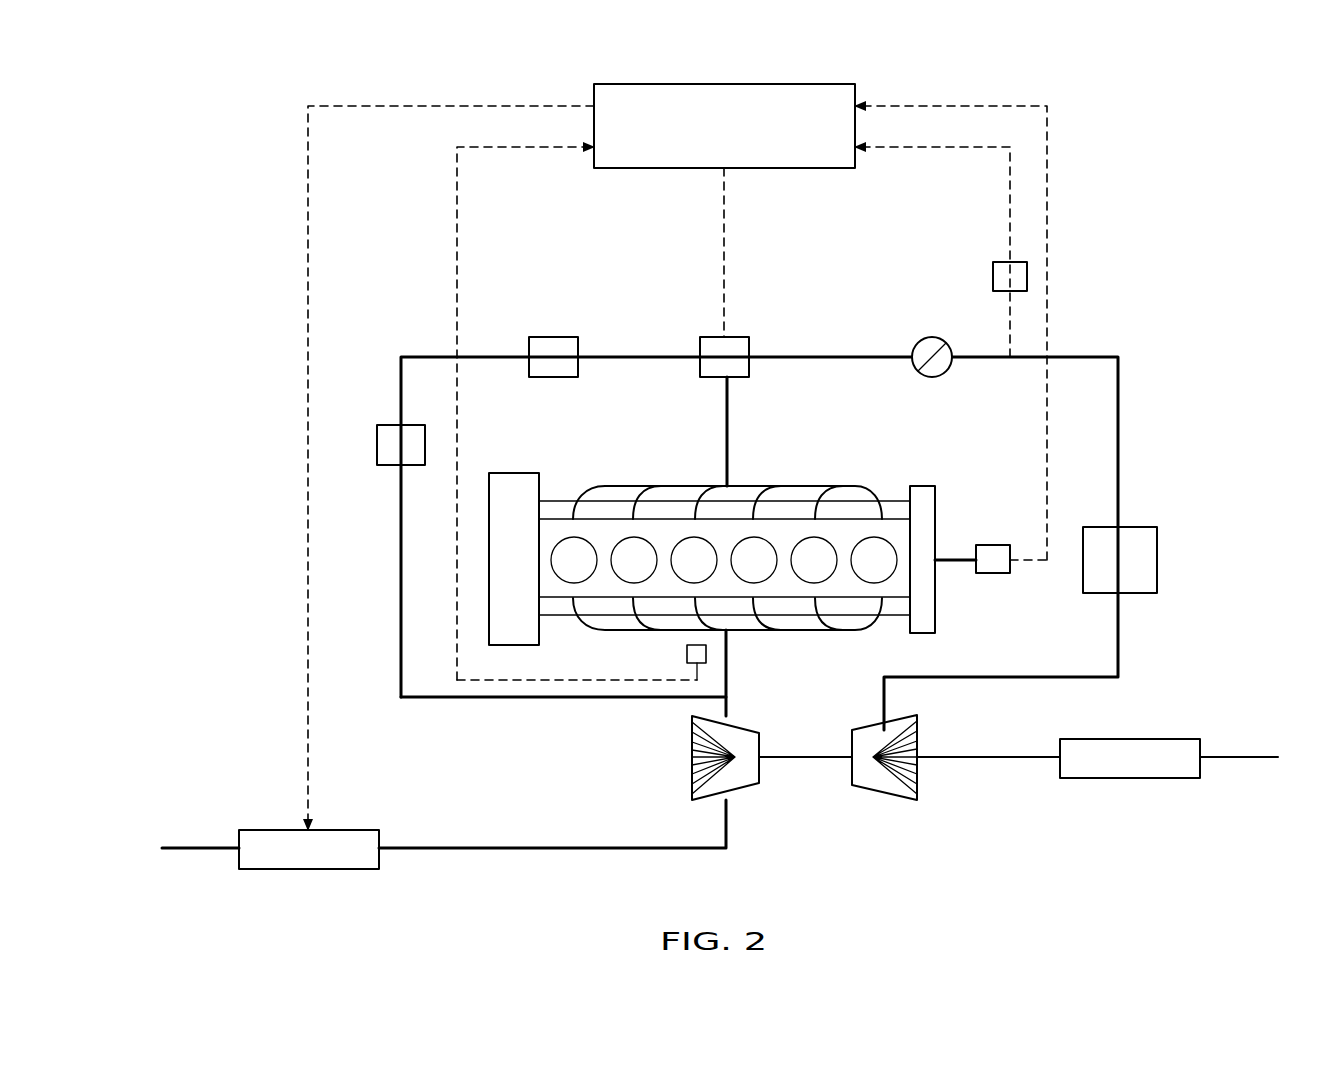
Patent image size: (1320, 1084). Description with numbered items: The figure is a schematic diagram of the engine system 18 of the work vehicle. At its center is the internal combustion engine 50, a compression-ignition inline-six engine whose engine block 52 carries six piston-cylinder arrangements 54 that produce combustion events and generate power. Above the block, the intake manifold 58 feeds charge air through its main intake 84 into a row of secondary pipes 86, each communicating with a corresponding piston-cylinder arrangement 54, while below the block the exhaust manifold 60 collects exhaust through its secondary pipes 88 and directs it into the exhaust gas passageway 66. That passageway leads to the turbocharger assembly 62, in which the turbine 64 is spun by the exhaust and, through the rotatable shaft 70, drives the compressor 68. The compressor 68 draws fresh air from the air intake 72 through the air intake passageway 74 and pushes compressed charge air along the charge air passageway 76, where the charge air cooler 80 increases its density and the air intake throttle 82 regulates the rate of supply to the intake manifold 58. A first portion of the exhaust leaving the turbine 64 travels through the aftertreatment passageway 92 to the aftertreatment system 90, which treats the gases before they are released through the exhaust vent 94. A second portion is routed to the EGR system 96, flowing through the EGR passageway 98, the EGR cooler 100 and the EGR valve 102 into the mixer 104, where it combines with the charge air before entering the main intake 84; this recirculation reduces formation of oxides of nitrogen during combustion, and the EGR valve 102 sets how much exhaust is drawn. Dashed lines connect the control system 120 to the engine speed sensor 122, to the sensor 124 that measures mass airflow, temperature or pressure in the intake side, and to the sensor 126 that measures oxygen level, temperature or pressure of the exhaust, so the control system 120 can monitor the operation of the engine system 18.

The engine system 18 is at (1122, 92).
The internal combustion engine 50 is at (580, 463).
The engine block 52 is at (935, 600).
The piston-cylinder arrangements 54 is at (588, 572).
The intake manifold 58 is at (841, 466).
The exhaust manifold 60 is at (744, 646).
The turbocharger assembly 62 is at (828, 806).
The turbine 64 is at (706, 800).
The exhaust gas passageway 66 is at (728, 683).
The compressor 68 is at (897, 802).
The rotatable shaft 70 is at (782, 760).
The air intake 72 is at (1128, 739).
The air intake passageway 74 is at (990, 756).
The charge air passageway 76 is at (1118, 437).
The charge air cooler 80 is at (1157, 560).
The air intake throttle 82 is at (936, 377).
The main intake 84 is at (727, 397).
The secondary pipes 86 is at (613, 487).
The secondary pipes 88 is at (580, 628).
The aftertreatment system 90 is at (308, 870).
The aftertreatment passageway 92 is at (525, 850).
The exhaust vent 94 is at (180, 850).
The EGR system 96 is at (385, 632).
The EGR passageway 98 is at (480, 699).
The EGR cooler 100 is at (377, 443).
The EGR valve 102 is at (554, 337).
The mixer 104 is at (700, 346).
The control system 120 is at (737, 84).
The engine speed sensor 122 is at (996, 545).
The sensor 124 is at (993, 276).
The sensor 126 is at (685, 660).